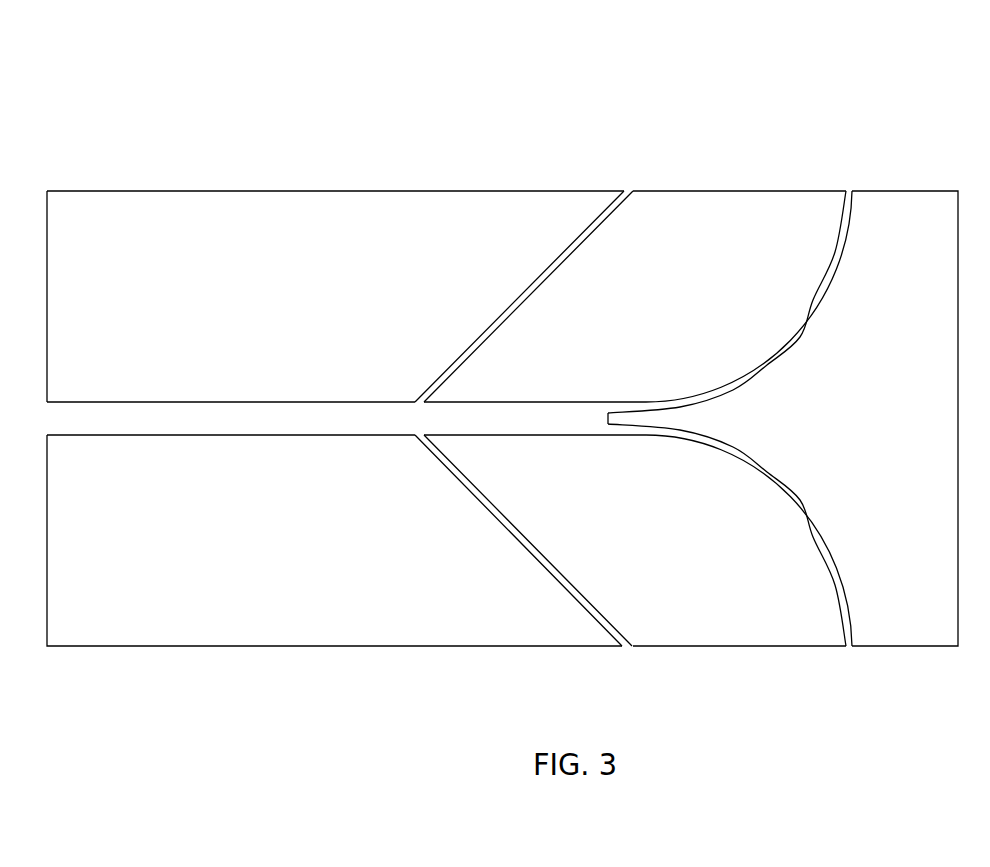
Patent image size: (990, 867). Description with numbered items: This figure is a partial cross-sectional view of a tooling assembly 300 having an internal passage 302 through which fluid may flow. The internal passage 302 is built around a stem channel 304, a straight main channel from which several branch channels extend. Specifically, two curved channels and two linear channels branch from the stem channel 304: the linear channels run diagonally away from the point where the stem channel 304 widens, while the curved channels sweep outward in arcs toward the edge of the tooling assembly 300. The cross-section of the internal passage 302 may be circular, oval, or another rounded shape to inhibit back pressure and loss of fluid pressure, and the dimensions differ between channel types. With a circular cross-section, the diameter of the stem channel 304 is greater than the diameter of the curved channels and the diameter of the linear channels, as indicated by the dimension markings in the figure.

The tooling assembly 300 is at (880, 100).
The internal passage 302 is at (405, 372).
The stem channel 304 is at (112, 435).